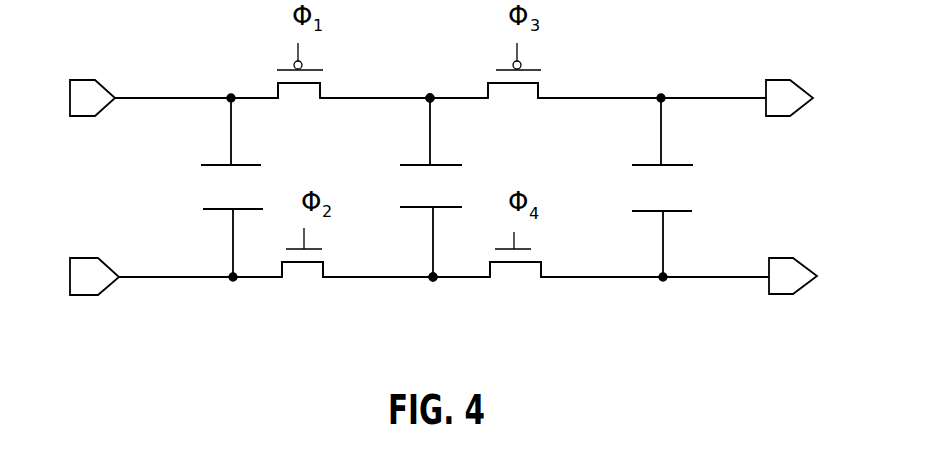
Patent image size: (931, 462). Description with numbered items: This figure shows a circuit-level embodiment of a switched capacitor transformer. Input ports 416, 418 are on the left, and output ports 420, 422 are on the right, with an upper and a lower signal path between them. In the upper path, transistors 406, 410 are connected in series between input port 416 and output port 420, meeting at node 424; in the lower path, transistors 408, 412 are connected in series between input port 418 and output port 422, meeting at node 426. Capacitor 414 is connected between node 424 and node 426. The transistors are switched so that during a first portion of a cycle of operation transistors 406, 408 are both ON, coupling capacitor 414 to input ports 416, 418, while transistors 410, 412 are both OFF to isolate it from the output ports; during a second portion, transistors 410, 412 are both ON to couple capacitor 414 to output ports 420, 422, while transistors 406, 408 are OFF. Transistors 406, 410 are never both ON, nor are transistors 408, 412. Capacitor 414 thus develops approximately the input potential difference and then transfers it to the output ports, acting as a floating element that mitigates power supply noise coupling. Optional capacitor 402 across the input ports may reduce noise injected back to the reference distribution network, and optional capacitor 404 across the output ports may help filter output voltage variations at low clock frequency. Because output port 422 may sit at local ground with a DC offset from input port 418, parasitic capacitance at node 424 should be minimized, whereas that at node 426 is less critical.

The capacitor 402 is at (204, 163).
The capacitor 404 is at (676, 213).
The transistor 406 is at (322, 92).
The transistor 408 is at (323, 279).
The transistor 410 is at (540, 93).
The transistor 412 is at (540, 279).
The capacitor 414 is at (450, 163).
The input port 416 is at (83, 79).
The input port 418 is at (93, 296).
The output port 420 is at (776, 79).
The output port 422 is at (786, 296).
The node 424 is at (430, 94).
The node 426 is at (434, 282).